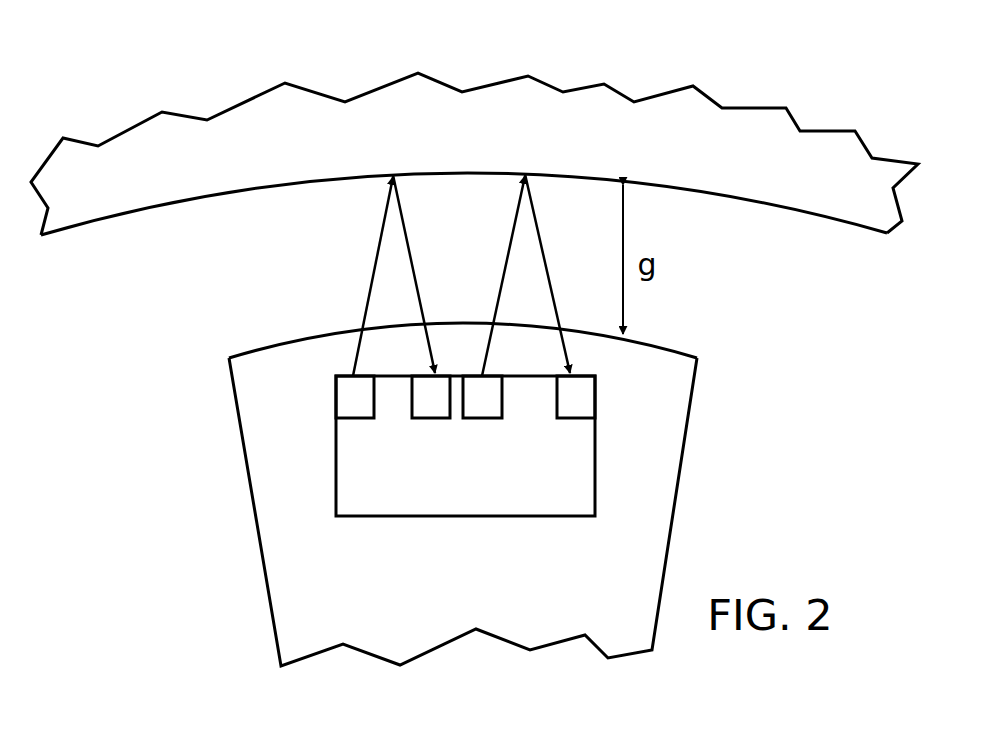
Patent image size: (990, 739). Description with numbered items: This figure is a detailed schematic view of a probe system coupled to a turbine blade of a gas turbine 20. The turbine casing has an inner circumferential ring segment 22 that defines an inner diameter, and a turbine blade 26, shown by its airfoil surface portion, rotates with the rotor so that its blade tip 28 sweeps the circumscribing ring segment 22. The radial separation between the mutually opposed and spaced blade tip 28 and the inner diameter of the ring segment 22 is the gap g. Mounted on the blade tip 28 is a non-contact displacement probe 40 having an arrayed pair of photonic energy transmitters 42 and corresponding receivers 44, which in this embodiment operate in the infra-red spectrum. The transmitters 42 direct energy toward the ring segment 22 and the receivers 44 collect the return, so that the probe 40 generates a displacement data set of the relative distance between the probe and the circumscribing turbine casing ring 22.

The gas turbine 20 is at (828, 100).
The inner circumferential ring segment 22 is at (778, 200).
The turbine blade 26 is at (673, 467).
The blade tip 28 is at (682, 352).
The displacement probe system 40 is at (372, 472).
The photonic energy transmitter 42 is at (355, 397).
The receiver 44 is at (435, 405).